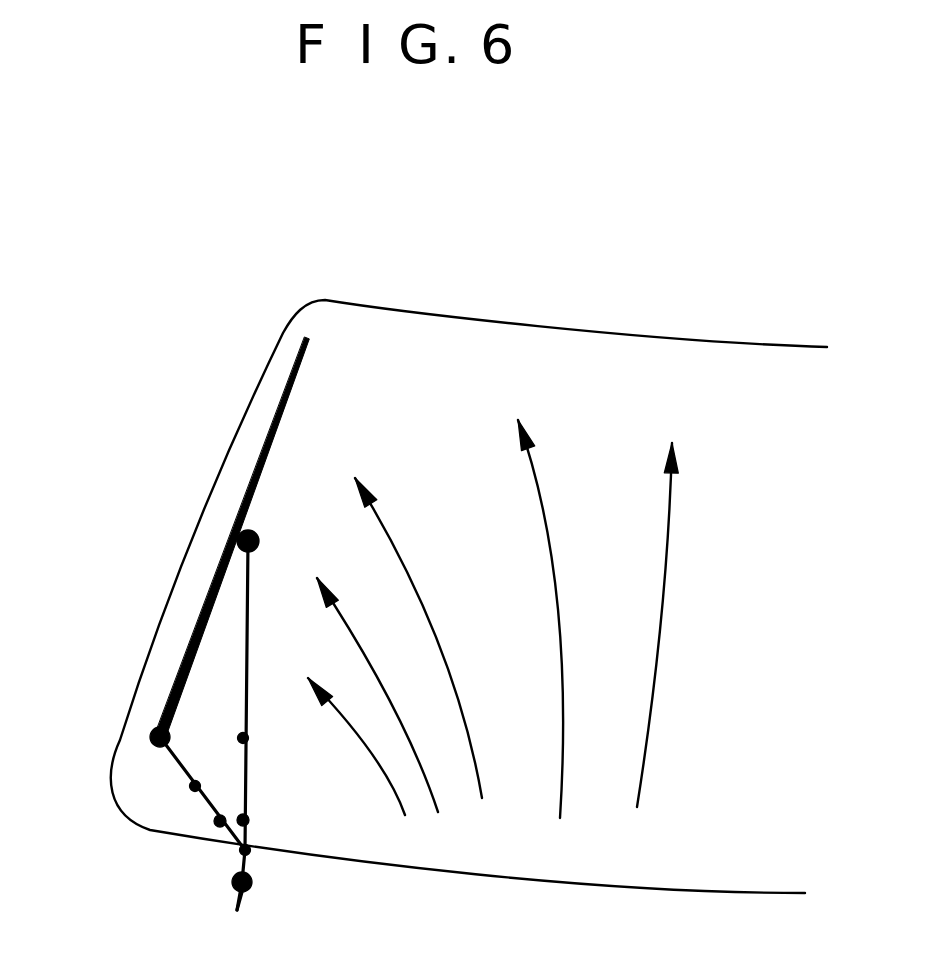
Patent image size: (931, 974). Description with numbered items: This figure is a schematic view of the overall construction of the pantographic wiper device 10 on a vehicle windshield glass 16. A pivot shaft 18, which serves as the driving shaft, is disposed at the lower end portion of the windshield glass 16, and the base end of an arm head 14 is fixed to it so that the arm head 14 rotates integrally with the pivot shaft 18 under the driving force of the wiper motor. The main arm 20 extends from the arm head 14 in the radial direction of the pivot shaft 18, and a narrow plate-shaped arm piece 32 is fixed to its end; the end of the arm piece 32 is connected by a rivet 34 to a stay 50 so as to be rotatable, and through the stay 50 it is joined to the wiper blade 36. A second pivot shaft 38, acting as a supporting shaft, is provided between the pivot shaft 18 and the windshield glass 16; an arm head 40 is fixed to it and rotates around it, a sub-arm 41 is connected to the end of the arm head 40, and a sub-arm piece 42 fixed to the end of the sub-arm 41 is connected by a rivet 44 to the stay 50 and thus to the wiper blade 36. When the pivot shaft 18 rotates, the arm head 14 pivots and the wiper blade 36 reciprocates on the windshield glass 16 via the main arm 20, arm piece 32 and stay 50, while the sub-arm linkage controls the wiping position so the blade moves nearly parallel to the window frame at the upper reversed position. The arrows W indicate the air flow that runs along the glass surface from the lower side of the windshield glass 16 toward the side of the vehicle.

The wiper device 10 is at (214, 651).
The arm head 14 is at (248, 833).
The windshield glass 16 is at (718, 375).
The pivot shaft 18 is at (237, 908).
The main arm 20 is at (246, 770).
The arm piece 32 is at (248, 650).
The rivet 34 is at (250, 530).
The wiper blade 36 is at (282, 418).
The pivot shaft 38 is at (248, 860).
The arm head 40 is at (232, 838).
The sub-arm 41 is at (211, 810).
The sub-arm piece 42 is at (176, 760).
The rivet 44 is at (152, 727).
The stay 50 is at (200, 623).
The air flow W is at (367, 750).